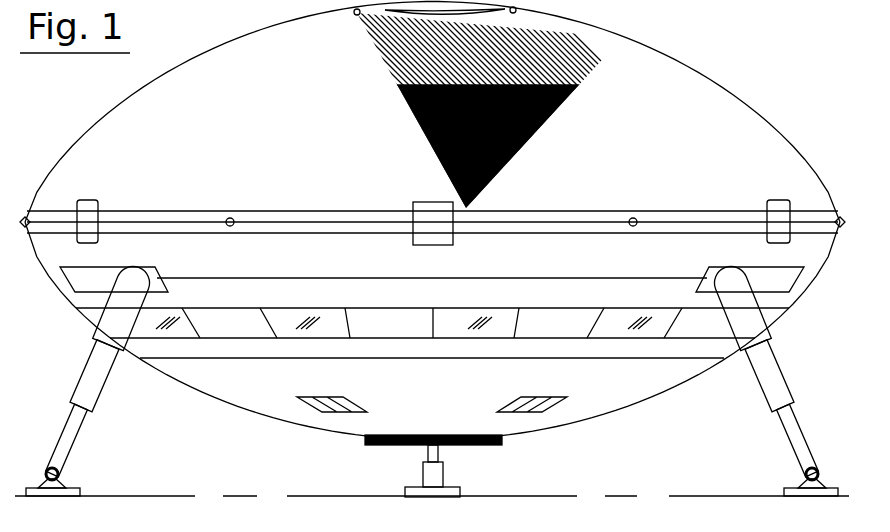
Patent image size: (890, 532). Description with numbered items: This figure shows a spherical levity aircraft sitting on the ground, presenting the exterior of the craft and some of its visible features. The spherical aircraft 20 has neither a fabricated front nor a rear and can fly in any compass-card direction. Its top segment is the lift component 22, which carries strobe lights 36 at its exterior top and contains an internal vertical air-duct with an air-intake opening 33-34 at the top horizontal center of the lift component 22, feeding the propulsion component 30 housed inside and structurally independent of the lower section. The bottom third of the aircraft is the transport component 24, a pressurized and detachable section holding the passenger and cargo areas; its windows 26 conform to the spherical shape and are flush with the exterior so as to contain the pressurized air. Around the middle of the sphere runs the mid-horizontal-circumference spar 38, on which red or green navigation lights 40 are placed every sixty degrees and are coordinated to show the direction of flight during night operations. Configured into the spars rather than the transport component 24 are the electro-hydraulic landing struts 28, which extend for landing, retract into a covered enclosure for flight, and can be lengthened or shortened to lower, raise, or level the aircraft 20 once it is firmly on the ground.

The spherical aircraft 20 is at (673, 118).
The lift component 22 is at (263, 173).
The transport component 24 is at (622, 373).
The windows 26 is at (325, 330).
The electro-hydraulic landing struts 28 is at (88, 374).
The propulsion component 30 is at (428, 223).
The vertical air-duct and air-intake opening 33-34 is at (520, 10).
The strobe lights 36 is at (516, 13).
The mid-horizontal-circumference spar 38 is at (708, 213).
The navigation lights 40 is at (25, 216).